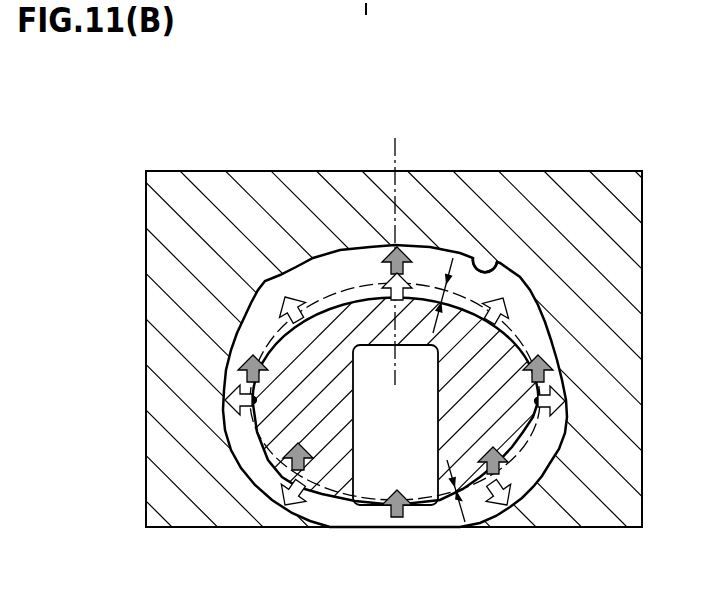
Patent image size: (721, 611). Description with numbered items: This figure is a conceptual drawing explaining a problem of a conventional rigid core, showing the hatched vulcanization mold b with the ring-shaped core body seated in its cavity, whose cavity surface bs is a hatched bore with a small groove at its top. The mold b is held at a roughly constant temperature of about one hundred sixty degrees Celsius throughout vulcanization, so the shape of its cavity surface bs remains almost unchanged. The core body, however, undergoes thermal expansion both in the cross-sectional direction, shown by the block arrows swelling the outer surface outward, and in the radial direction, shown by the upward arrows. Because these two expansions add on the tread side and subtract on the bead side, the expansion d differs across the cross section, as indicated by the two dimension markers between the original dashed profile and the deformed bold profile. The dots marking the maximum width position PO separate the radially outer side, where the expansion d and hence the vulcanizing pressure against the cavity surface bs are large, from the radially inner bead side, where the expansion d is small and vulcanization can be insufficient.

The vulcanization mold b is at (230, 208).
The expansion d is at (437, 280).
The cavity surface bs is at (495, 260).
The maximum width position PO is at (253, 402).